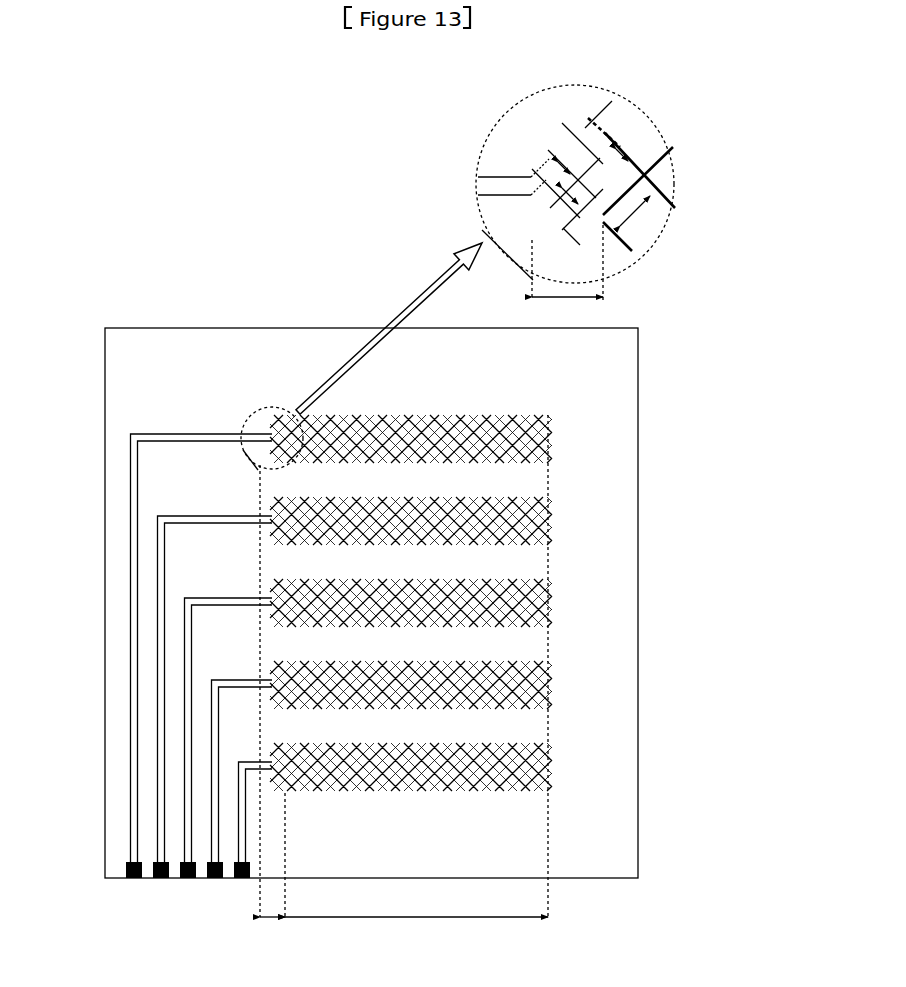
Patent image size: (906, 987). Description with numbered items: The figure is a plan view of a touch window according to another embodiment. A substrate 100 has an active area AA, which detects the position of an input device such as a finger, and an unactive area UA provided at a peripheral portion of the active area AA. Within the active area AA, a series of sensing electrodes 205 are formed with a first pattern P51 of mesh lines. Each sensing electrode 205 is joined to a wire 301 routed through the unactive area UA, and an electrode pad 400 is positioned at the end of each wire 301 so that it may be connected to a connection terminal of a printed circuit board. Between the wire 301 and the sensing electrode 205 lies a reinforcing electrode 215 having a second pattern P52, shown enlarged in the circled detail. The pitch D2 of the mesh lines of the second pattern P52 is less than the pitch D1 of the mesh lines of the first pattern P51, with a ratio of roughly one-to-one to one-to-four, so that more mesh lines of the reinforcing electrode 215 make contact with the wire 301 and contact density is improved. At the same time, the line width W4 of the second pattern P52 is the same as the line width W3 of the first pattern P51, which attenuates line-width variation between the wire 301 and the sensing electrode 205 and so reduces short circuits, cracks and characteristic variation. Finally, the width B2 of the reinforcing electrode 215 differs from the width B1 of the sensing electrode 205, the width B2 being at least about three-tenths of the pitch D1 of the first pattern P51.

The substrate 100 is at (408, 603).
The unactive area UA is at (620, 373).
The active area AA is at (481, 597).
The sensing electrode 205 is at (345, 415).
The reinforcing electrode 215 is at (278, 412).
The wire 301 is at (130, 483).
The electrode pad 400 is at (125, 866).
The width of the sensing electrode B1 is at (416, 930).
The width of the reinforcing electrode B2 is at (431, 584).
The second pattern P52 is at (600, 107).
The first pattern P51 is at (648, 195).
The line width of a mesh line of the first pattern W3 is at (618, 146).
The line width of a mesh line of the second pattern W4 is at (555, 160).
The pitch of a mesh line of the first pattern D1 is at (636, 221).
The pitch of a mesh line of the second pattern D2 is at (540, 199).